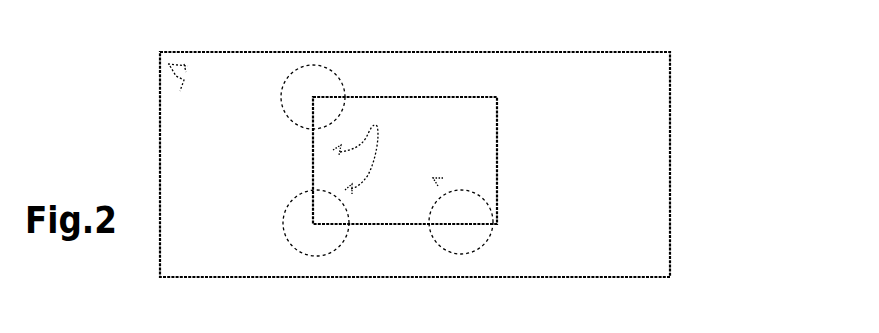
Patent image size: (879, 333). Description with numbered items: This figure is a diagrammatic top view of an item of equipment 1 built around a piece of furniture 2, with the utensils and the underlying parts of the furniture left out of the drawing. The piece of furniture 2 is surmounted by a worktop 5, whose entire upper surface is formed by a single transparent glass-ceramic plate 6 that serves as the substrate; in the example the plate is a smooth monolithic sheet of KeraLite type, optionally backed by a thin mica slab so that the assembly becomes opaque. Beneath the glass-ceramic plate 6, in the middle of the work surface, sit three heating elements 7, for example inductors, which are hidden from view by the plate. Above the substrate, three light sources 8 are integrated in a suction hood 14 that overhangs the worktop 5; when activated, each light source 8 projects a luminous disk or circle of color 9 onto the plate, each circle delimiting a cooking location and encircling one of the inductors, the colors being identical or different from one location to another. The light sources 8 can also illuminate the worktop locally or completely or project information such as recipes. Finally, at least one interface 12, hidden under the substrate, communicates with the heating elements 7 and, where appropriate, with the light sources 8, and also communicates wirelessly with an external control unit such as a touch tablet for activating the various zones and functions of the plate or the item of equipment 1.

The item of equipment 1 is at (722, 97).
The piece of furniture 2 is at (613, 47).
The worktop 5 is at (453, 67).
The glass-ceramic plate 6 is at (672, 190).
The heating elements 7 is at (283, 90).
The light sources 8 is at (438, 184).
The luminous disk or circle of color 9 is at (316, 66).
The interface 12 is at (168, 68).
The suction hood 14 is at (480, 125).